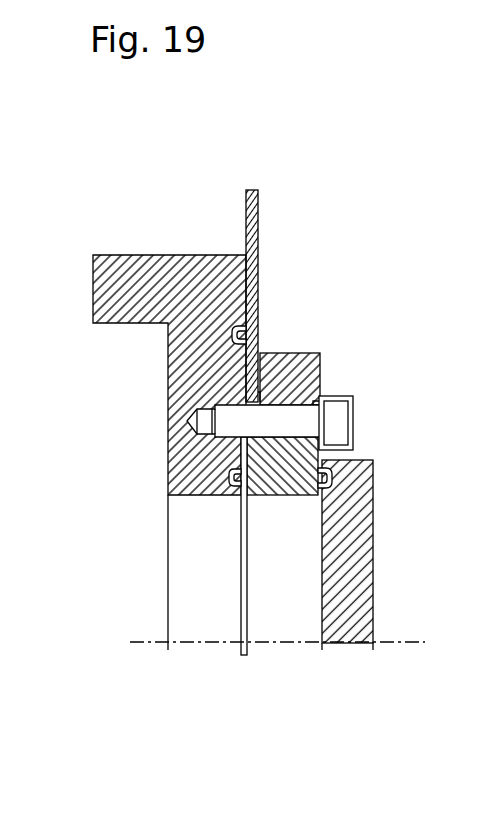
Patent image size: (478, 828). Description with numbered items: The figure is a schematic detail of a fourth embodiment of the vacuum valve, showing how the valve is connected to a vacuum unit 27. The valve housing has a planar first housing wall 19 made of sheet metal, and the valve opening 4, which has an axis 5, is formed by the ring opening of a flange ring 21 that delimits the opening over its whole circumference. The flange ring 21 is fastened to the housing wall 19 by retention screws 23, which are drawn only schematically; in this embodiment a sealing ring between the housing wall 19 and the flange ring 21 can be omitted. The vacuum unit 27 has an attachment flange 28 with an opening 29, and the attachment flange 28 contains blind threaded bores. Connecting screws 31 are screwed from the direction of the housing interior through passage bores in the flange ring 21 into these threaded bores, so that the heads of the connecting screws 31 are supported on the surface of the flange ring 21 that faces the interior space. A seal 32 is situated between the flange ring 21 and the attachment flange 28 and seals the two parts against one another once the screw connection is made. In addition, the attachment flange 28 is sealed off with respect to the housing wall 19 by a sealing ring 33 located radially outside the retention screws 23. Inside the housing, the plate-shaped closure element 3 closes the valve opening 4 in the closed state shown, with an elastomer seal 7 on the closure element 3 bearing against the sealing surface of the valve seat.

The closure element 3 is at (345, 517).
The valve opening 4 is at (282, 603).
The axis 5 is at (385, 642).
The elastomer seal 7 is at (330, 477).
The first housing wall 19 is at (253, 250).
The flange ring 21 is at (313, 407).
The retention screws 23 is at (299, 378).
The vacuum unit 27 is at (134, 245).
The attachment flange 28 is at (187, 373).
The opening 29 is at (208, 603).
The connecting screws 31 is at (284, 421).
The seal 32 is at (232, 476).
The sealing ring 33 is at (240, 332).